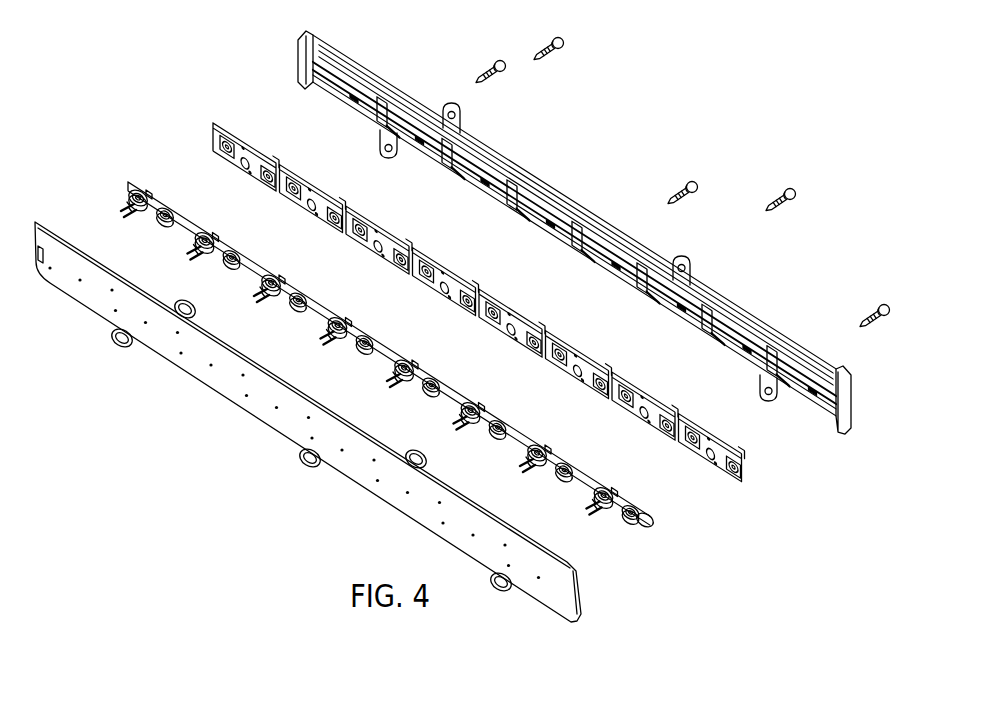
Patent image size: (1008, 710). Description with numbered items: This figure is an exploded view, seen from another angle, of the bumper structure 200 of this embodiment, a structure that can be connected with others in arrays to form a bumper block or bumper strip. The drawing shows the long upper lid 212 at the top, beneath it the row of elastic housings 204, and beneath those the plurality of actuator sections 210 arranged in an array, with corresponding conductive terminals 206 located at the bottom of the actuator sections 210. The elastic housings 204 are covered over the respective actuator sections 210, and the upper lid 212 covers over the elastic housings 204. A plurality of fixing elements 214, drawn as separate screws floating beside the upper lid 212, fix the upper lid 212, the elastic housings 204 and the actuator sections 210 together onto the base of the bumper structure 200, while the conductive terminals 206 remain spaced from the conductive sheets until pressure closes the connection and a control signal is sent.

The bumper structure 200 is at (721, 524).
The elastic housings 204 is at (258, 145).
The conductive terminals 206 is at (658, 537).
The actuator sections 210 is at (215, 235).
The upper lid 212 is at (738, 313).
The fixing elements 214 is at (694, 188).